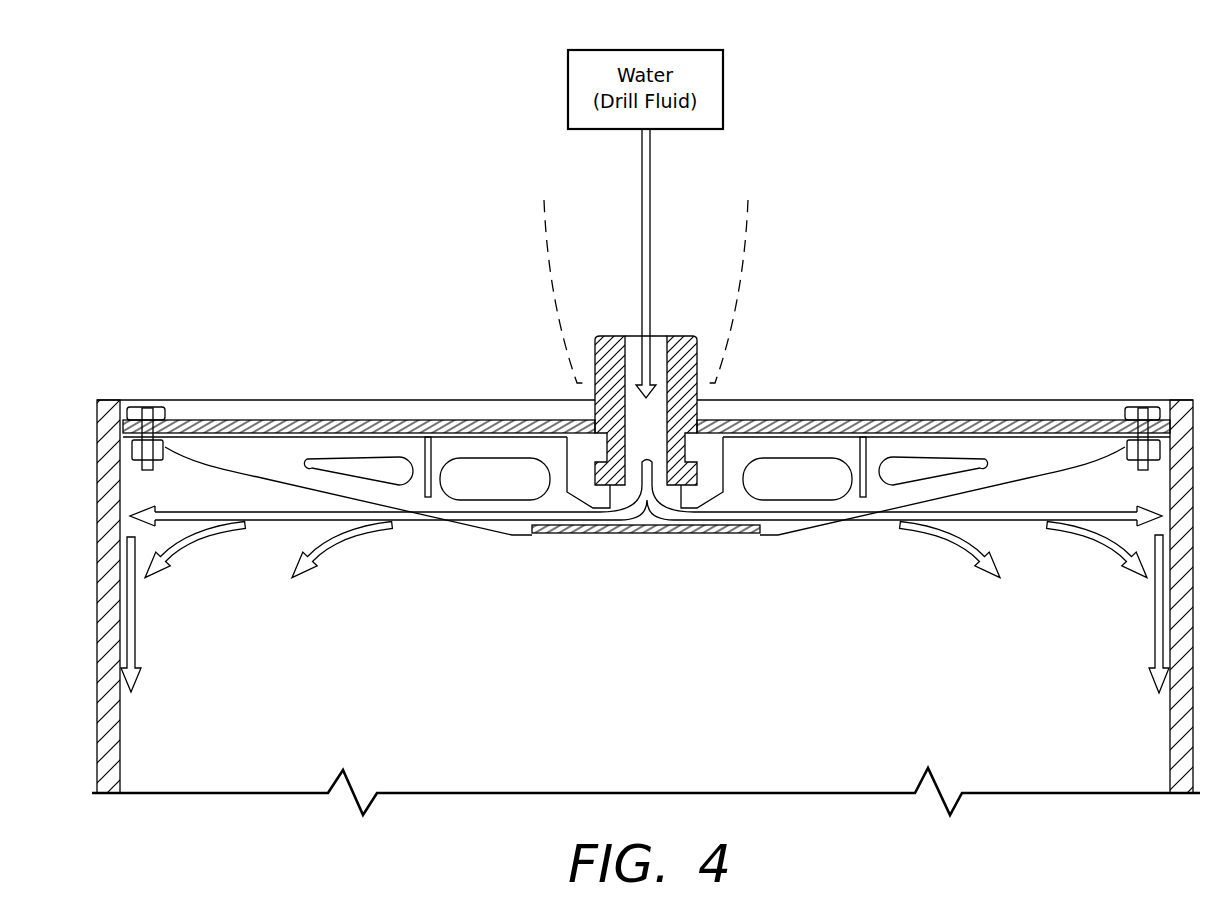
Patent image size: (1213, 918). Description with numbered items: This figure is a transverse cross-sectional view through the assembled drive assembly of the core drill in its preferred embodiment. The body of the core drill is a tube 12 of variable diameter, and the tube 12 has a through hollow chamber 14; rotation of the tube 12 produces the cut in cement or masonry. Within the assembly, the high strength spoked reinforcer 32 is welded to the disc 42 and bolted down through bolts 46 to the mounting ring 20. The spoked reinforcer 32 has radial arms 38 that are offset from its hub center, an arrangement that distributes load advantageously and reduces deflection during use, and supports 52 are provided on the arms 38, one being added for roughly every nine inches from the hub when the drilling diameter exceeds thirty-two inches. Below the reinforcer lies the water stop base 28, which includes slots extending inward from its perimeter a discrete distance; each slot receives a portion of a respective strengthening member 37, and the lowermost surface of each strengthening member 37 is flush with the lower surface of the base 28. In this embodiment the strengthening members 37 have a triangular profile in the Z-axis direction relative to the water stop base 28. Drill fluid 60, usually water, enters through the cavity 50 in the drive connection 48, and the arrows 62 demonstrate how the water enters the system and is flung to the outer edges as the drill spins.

The tube 12 is at (1180, 740).
The hollow chamber 14 is at (662, 706).
The mounting ring 20 is at (187, 427).
The water stop base 28 is at (720, 535).
The high strength spoked reinforcer 32 is at (500, 534).
The strengthening member 37 is at (312, 445).
The radial arm 38 is at (242, 447).
The disc 42 is at (1045, 420).
The bolt 46 is at (1145, 410).
The drive connection 48 is at (697, 345).
The cavity 50 is at (638, 337).
The support 52 is at (422, 450).
The drill fluid 60 is at (663, 311).
The arrows 62 is at (275, 518).